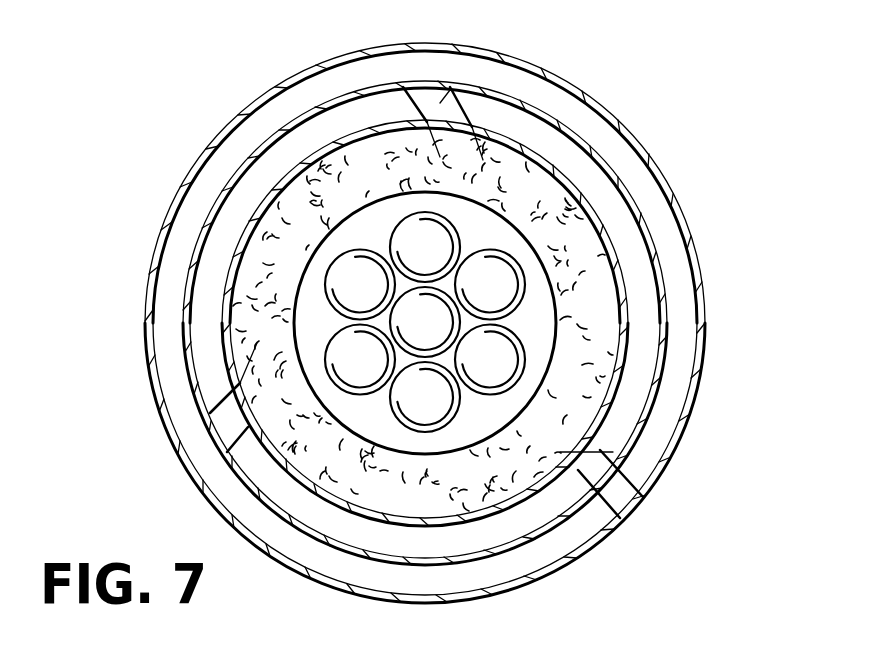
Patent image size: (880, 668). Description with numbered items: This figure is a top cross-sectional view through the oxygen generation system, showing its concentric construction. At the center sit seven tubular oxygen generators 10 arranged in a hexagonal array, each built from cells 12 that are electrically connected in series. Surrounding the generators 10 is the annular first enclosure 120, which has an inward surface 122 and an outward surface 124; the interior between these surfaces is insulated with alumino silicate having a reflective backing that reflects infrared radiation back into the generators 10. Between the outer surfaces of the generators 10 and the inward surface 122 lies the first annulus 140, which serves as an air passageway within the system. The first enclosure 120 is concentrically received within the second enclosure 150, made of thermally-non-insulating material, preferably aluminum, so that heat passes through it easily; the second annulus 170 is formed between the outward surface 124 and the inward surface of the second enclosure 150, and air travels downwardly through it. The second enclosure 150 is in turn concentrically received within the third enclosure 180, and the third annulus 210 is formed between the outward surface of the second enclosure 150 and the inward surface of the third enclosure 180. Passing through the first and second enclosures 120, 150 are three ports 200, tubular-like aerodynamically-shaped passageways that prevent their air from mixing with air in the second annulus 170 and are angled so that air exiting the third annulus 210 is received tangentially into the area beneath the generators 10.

The generator 10 is at (484, 390).
The cell 12 is at (486, 395).
The first enclosure 120 is at (600, 356).
The inward surface 122 is at (543, 378).
The outward surface 124 is at (625, 318).
The first annulus 140 is at (507, 407).
The second enclosure 150 is at (640, 217).
The second annulus 170 is at (635, 278).
The third enclosure 180 is at (592, 100).
The port 200 is at (460, 83).
The third annulus 210 is at (620, 158).